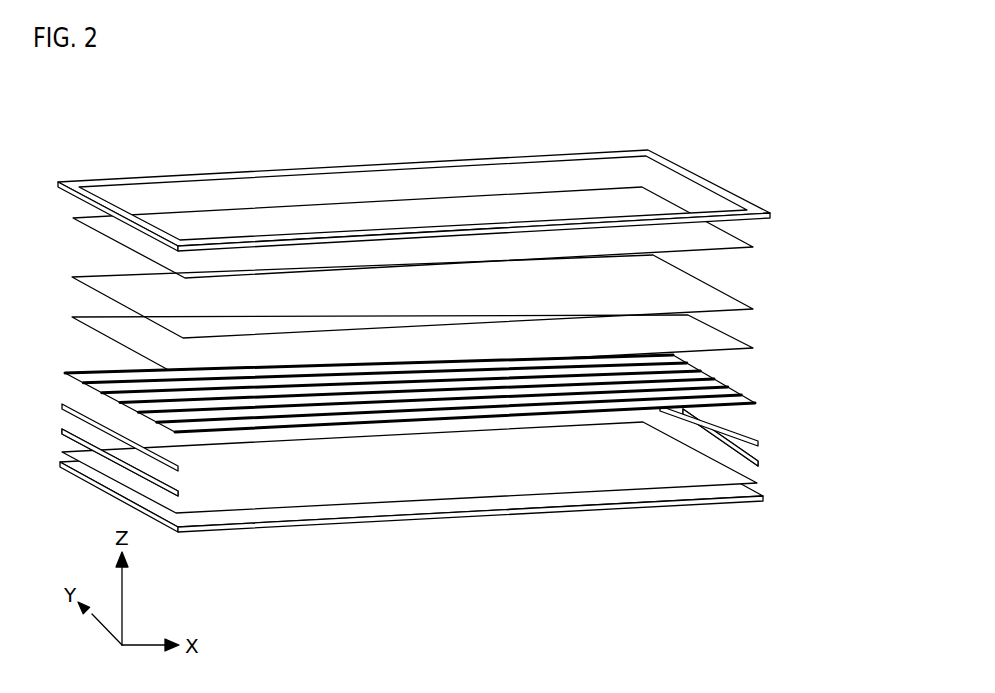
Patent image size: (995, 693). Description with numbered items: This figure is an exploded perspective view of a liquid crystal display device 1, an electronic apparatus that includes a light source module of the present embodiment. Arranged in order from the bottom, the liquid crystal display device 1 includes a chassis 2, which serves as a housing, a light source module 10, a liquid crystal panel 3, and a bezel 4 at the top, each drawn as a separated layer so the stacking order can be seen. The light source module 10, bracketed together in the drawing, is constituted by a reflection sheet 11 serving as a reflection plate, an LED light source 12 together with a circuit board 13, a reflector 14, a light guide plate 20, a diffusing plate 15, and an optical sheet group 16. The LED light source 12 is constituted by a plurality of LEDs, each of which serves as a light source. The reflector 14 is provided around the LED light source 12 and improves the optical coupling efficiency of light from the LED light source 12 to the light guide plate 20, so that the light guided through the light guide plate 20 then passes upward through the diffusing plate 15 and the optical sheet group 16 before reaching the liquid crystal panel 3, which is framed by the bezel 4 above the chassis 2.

The liquid crystal display device 1 is at (741, 133).
The chassis 2 is at (763, 498).
The liquid crystal panel 3 is at (753, 247).
The bezel 4 is at (770, 214).
The light source module 10 is at (837, 293).
The reflection sheet 11 is at (757, 483).
The LED light source 12 is at (758, 463).
The circuit board 13 is at (453, 452).
The reflector 14 is at (758, 443).
The diffusing plate 15 is at (753, 348).
The optical sheet group 16 is at (753, 309).
The light guide plate 20 is at (755, 403).